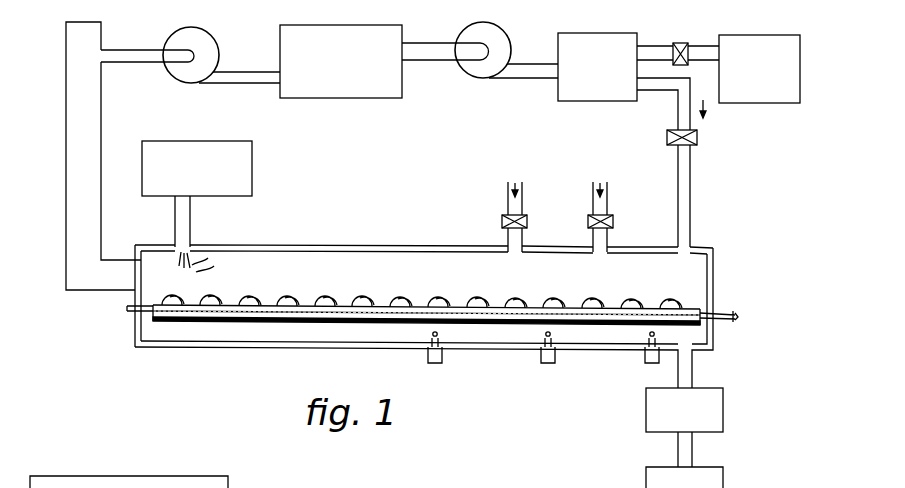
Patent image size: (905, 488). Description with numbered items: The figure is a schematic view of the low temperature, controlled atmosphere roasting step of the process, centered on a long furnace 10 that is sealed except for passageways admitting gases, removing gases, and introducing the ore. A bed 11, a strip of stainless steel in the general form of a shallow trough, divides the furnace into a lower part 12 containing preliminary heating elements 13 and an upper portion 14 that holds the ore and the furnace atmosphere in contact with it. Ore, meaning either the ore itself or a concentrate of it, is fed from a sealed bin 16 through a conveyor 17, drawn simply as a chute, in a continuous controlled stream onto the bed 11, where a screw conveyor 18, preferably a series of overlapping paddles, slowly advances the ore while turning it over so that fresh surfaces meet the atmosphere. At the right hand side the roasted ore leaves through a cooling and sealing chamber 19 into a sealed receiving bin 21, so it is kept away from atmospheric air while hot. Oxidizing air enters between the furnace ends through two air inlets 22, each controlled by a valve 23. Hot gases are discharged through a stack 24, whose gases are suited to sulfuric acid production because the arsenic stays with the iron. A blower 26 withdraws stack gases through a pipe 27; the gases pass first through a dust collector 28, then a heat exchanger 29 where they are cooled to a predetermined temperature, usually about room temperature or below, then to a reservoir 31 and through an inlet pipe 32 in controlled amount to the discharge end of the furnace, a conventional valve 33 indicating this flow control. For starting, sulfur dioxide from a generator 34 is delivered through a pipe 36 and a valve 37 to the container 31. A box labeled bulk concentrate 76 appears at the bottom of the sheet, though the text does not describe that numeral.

The furnace 10 is at (314, 347).
The bed 11 is at (382, 310).
The lower part 12 is at (500, 344).
The preliminary heating elements 13 is at (554, 360).
The upper portion 14 is at (549, 266).
The bin 16 is at (252, 186).
The conveyor 17 is at (190, 229).
The screw conveyor 18 is at (556, 298).
The cooling and sealing chamber 19 is at (723, 417).
The sealed receiving bin 21 is at (723, 482).
The air inlets 22 is at (510, 239).
The valve 23 is at (502, 222).
The stack 24 is at (66, 80).
The blower 26 is at (496, 36).
The pipe 27 is at (433, 43).
The dust collector 28 is at (206, 45).
The heat exchanger 29 is at (405, 21).
The reservoir 31 is at (623, 33).
The inlet pipe 32 is at (689, 178).
The valve 33 is at (697, 137).
The generator 34 is at (778, 103).
The pipe 36 is at (702, 48).
The valve 37 is at (683, 43).
The bulk concentrate 76 is at (167, 476).